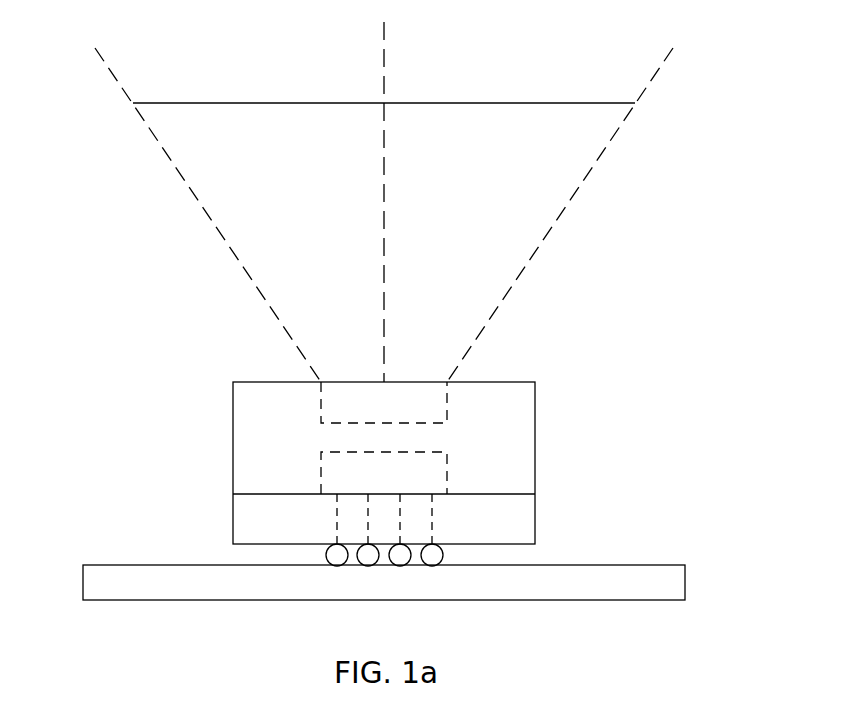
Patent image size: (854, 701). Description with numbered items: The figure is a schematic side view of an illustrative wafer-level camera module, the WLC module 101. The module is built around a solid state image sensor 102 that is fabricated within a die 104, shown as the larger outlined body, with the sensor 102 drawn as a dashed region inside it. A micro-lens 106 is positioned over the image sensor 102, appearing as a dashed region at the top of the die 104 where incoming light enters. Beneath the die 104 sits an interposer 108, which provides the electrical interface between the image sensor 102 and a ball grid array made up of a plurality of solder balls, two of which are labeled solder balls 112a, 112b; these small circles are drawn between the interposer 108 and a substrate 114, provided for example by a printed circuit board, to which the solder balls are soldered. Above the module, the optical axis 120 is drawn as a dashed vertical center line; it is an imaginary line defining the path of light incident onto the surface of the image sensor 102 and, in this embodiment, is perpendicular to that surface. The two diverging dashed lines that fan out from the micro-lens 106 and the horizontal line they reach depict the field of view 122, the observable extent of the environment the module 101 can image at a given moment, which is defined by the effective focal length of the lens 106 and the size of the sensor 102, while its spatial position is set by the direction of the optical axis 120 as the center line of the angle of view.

The WLC module 101 is at (165, 303).
The solid state image sensor 102 is at (401, 480).
The die 104 is at (535, 396).
The micro-lens 106 is at (401, 414).
The interposer 108 is at (512, 530).
The solder ball 112a is at (328, 566).
The solder ball 112b is at (377, 566).
The substrate 114 is at (685, 572).
The optical axis 120 is at (384, 63).
The field of view 122 is at (538, 103).